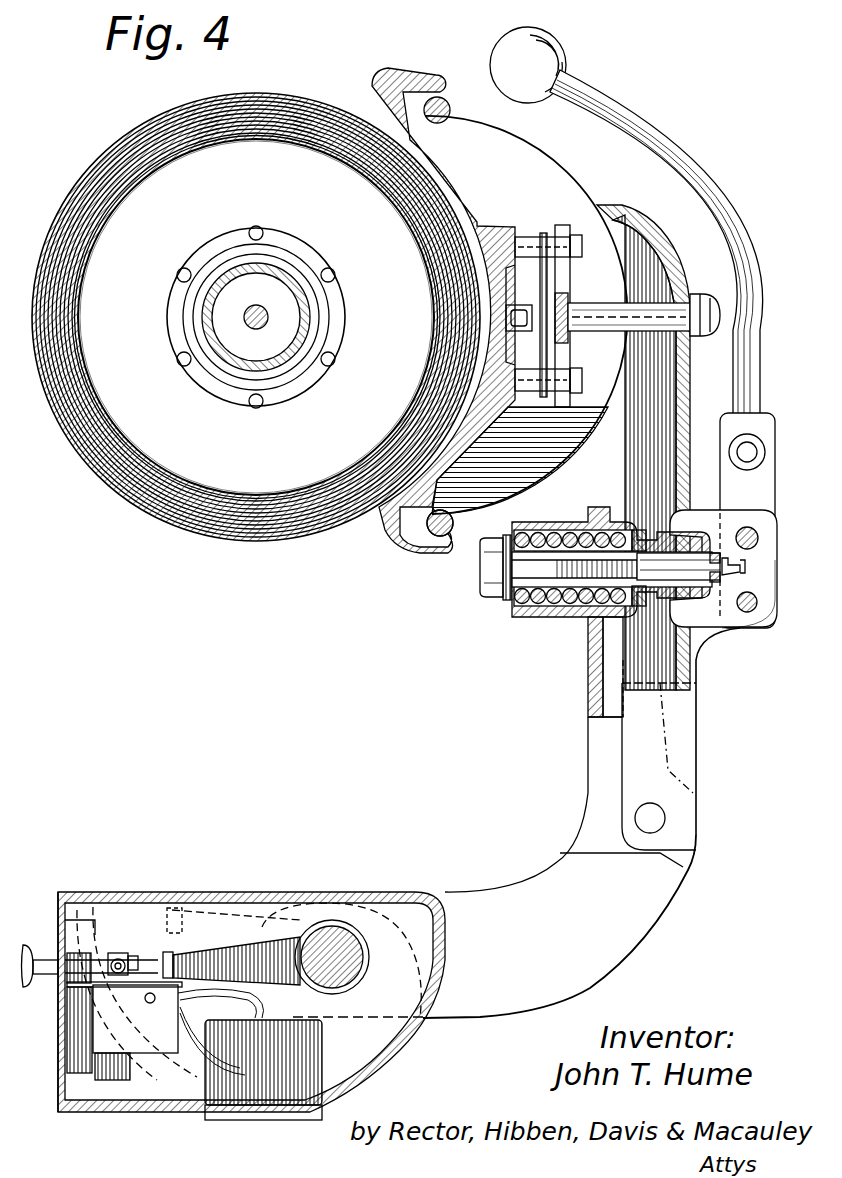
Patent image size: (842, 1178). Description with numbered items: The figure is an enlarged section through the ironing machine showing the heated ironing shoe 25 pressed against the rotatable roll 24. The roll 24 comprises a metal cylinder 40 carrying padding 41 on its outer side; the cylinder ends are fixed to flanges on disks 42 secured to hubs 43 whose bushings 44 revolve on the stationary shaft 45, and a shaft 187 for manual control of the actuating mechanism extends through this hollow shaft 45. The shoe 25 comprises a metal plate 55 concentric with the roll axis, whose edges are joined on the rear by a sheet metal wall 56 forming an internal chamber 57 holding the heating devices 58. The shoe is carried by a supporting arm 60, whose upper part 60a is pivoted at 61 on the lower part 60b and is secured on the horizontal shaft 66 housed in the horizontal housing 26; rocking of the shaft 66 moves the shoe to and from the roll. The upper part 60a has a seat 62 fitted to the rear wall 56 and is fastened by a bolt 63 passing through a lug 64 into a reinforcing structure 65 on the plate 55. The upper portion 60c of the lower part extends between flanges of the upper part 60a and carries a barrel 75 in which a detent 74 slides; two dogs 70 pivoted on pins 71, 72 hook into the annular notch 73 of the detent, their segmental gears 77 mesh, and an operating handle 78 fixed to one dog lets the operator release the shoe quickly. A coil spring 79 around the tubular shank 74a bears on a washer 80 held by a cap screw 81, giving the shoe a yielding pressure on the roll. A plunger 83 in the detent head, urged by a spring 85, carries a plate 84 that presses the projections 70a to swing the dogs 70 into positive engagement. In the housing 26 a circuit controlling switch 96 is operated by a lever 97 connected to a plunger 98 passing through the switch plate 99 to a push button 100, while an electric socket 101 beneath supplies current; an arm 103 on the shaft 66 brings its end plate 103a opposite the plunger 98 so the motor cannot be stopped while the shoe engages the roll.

The rotatable roll 24 is at (97, 152).
The movable ironing shoe 25 is at (385, 68).
The horizontal housing 26 is at (398, 1050).
The metal cylinder 40 is at (79, 302).
The padding 41 is at (92, 472).
The disks 42 is at (236, 470).
The hubs 43 is at (341, 318).
The bushings 44 is at (292, 356).
The stationary shaft 45 is at (215, 360).
The metal plate 55 is at (458, 176).
The sheet metal wall 56 is at (532, 185).
The internal chamber 57 is at (568, 182).
The heating devices 58 is at (524, 308).
The supporting arm 60 is at (546, 866).
The upper part of supporting arm 60a is at (700, 752).
The lower part of supporting arm 60b is at (567, 926).
The upper portion of lower part 60c is at (595, 712).
The pivot 61 is at (665, 820).
The seat 62 is at (626, 212).
The bolt 63 is at (712, 302).
The lug 64 is at (665, 332).
The reinforcing structure 65 is at (551, 385).
The horizontal shaft 66 is at (332, 955).
The dogs 70 is at (690, 520).
The projections of dogs 70a is at (750, 578).
The pin 71 is at (757, 528).
The pin 72 is at (753, 614).
The annular notch 73 is at (700, 582).
The detent 74 is at (660, 594).
The tubular shank of detent 74a is at (552, 540).
The barrel 75 is at (540, 618).
The segmental gears 77 is at (746, 568).
The operating handle 78 is at (600, 94).
The coil spring 79 is at (522, 598).
The washer 80 is at (506, 572).
The cap screw 81 is at (488, 570).
The plunger 83 is at (760, 556).
The plate 84 is at (760, 604).
The spring 85 is at (585, 582).
The circuit controlling switch 96 is at (123, 1000).
The lever 97 is at (165, 950).
The plunger 98 is at (110, 958).
The switch plate 99 is at (60, 1052).
The push button 100 is at (30, 944).
The electric socket 101 is at (266, 1082).
The arm 103 is at (250, 960).
The end plate 103a is at (178, 985).
The shaft 187 is at (262, 310).